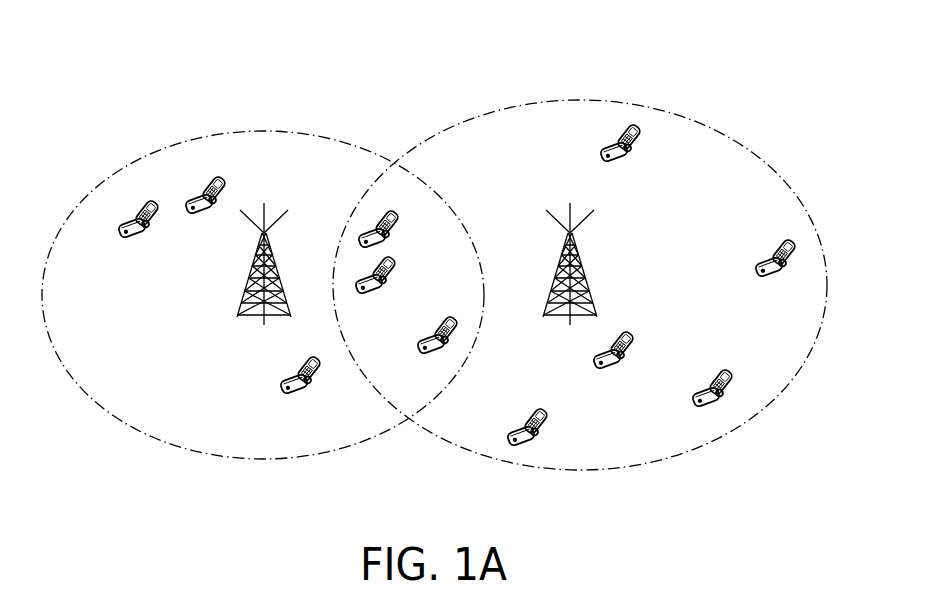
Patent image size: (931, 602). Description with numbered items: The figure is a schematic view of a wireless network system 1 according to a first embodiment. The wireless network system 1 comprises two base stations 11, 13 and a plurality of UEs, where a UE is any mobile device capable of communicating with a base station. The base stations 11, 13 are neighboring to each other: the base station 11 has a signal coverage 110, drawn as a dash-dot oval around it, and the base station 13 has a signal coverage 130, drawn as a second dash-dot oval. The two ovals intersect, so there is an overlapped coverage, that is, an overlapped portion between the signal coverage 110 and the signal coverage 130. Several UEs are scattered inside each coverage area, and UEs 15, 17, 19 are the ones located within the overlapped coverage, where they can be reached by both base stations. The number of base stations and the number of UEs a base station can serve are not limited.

The wireless network system 1 is at (329, 40).
The signal coverage 110 is at (166, 140).
The signal coverage 130 is at (647, 102).
The base station 11 is at (243, 300).
The base station 13 is at (585, 285).
The UE 15 is at (396, 236).
The UE 17 is at (392, 280).
The UE 19 is at (420, 345).